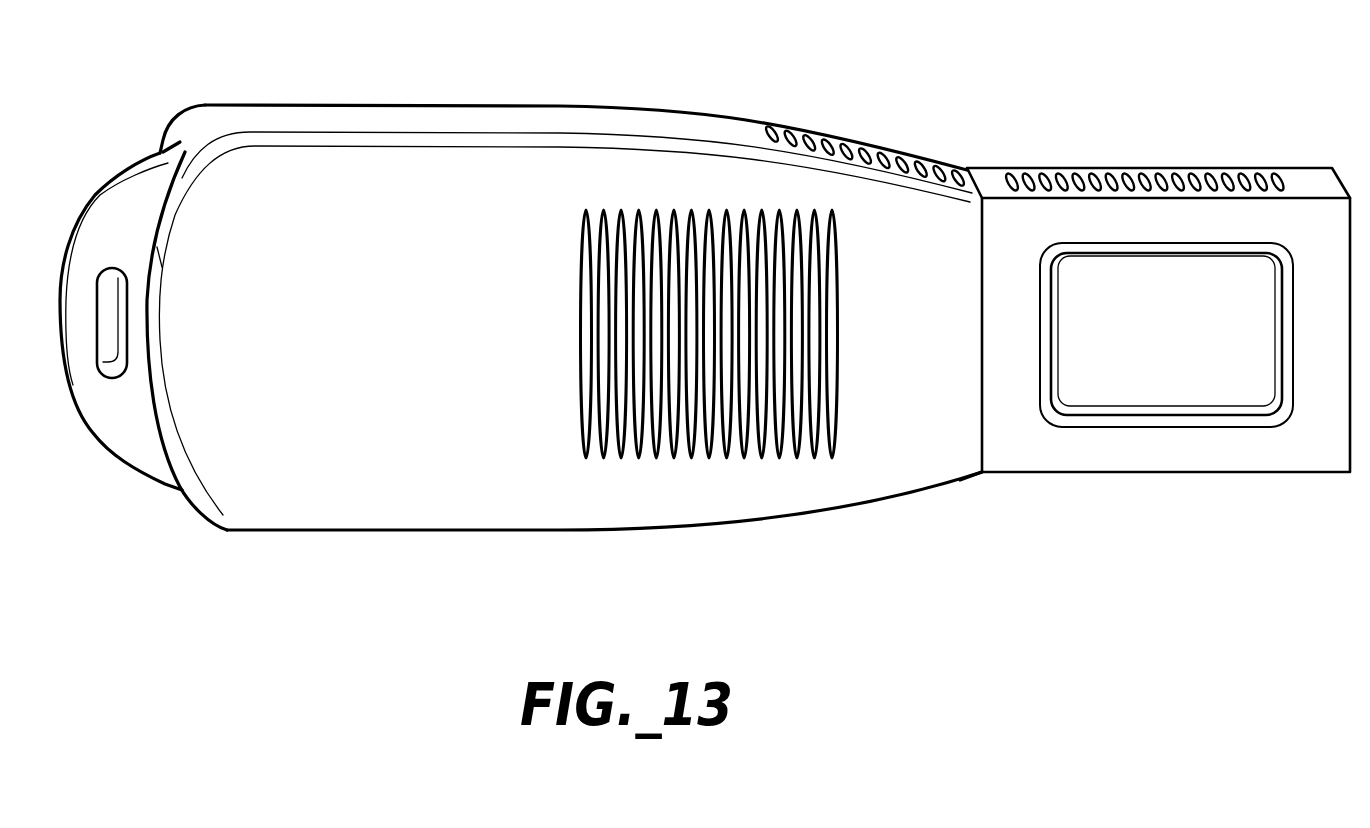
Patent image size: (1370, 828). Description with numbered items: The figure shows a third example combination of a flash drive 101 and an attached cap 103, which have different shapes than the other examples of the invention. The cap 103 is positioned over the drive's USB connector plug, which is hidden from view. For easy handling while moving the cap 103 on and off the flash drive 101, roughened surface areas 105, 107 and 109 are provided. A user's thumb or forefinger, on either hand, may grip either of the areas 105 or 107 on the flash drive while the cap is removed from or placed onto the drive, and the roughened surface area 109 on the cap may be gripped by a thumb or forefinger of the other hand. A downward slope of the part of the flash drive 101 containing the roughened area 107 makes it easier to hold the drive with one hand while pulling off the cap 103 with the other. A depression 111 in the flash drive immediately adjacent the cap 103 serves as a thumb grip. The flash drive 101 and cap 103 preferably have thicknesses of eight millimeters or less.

The flash drive 101 is at (705, 323).
The cap 103 is at (1167, 368).
The roughened surface area 105 is at (708, 415).
The roughened surface area 107 is at (865, 140).
The roughened surface area 109 is at (1097, 175).
The depression 111 is at (955, 345).